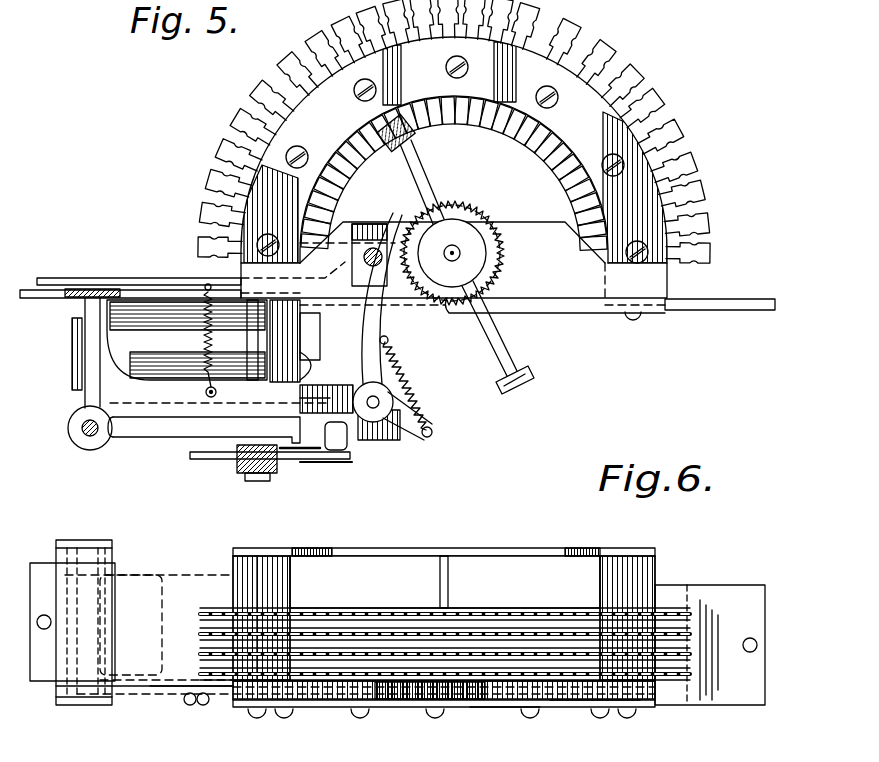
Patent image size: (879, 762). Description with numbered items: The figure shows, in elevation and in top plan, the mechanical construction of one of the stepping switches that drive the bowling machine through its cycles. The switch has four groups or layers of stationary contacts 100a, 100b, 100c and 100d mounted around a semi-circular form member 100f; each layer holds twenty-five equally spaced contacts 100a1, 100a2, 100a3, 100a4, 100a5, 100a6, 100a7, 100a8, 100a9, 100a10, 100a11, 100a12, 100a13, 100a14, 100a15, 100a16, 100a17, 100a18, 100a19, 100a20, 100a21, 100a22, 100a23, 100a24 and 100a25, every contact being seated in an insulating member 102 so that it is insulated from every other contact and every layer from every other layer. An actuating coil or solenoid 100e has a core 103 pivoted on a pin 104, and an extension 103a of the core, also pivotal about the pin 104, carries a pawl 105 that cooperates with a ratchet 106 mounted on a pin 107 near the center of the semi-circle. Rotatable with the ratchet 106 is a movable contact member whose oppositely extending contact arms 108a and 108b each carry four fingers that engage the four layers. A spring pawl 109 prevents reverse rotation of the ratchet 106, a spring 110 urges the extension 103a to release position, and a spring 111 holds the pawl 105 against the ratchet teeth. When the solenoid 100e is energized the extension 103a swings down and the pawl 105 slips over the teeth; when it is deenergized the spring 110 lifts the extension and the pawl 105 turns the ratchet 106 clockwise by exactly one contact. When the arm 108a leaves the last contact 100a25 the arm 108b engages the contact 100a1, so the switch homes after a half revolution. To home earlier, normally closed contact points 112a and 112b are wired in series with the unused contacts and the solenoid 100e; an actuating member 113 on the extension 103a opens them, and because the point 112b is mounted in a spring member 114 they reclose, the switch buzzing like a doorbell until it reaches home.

In FIG. 5, the stationary contact 100a1 is at (206, 247).
In FIG. 5, the stationary contact 100a2 is at (209, 213).
In FIG. 5, the stationary contact 100a3 is at (216, 179).
In FIG. 5, the stationary contact 100a4 is at (228, 142).
In FIG. 5, the stationary contact 100a5 is at (244, 112).
In FIG. 5, the stationary contact 100a6 is at (262, 93).
In FIG. 5, the stationary contact 100a7 is at (290, 64).
In FIG. 5, the stationary contact 100a8 is at (323, 35).
In FIG. 5, the stationary contact 100a9 is at (349, 15).
In FIG. 5, the stationary contact 100a10 is at (392, 27).
In FIG. 5, the stationary contact 100a11 is at (419, 23).
In FIG. 5, the stationary contact 100a12 is at (446, 20).
In FIG. 5, the stationary contact 100a13 is at (473, 19).
In FIG. 5, the stationary contact 100a14 is at (499, 20).
In FIG. 5, the stationary contact 100a15 is at (524, 22).
In FIG. 5, the stationary contact 100a16 is at (528, 13).
In FIG. 5, the stationary contact 100a17 is at (569, 30).
In FIG. 5, the stationary contact 100a18 is at (602, 49).
In FIG. 5, the stationary contact 100a19 is at (631, 77).
In FIG. 5, the stationary contact 100a20 is at (652, 101).
In FIG. 5, the stationary contact 100a21 is at (672, 122).
In FIG. 5, the stationary contact 100a22 is at (687, 157).
In FIG. 5, the stationary contact 100a23 is at (699, 187).
In FIG. 5, the stationary contact 100a24 is at (704, 217).
In FIG. 5, the last stationary contact 100a25 is at (702, 253).
In FIG. 6, the layer of stationary contacts 100a is at (214, 670).
In FIG. 6, the layer of stationary contacts 100b is at (214, 651).
In FIG. 6, the layer of stationary contacts 100c is at (214, 631).
In FIG. 6, the layer of stationary contacts 100d is at (214, 612).
In FIG. 5, the actuating coil or solenoid 100e is at (150, 305).
In FIG. 6, the actuating coil or solenoid 100e is at (178, 572).
In FIG. 5, the semi-circular form member 100f is at (700, 298).
In FIG. 6, the semi-circular form member 100f is at (500, 710).
In FIG. 6, the insulating member 102 is at (388, 610).
In FIG. 5, the core 103 is at (112, 332).
In FIG. 6, the core 103 is at (100, 618).
In FIG. 5, the extension of the core 103a is at (192, 396).
In FIG. 6, the extension of the core 103a is at (163, 690).
In FIG. 5, the pin 104 is at (86, 436).
In FIG. 6, the pin 104 is at (95, 526).
In FIG. 5, the pawl 105 is at (370, 322).
In FIG. 5, the ratchet 106 is at (470, 204).
In FIG. 6, the ratchet 106 is at (406, 708).
In FIG. 5, the pin 107 is at (452, 253).
In FIG. 6, the pin 107 is at (449, 586).
In FIG. 5, the contact arm 108a is at (424, 153).
In FIG. 5, the contact arm 108b is at (496, 355).
In FIG. 5, the spring pawl 109 is at (535, 315).
In FIG. 6, the spring pawl 109 is at (568, 710).
In FIG. 5, the spring 110 is at (203, 345).
In FIG. 6, the spring 110 is at (200, 705).
In FIG. 5, the spring 111 is at (416, 400).
In FIG. 5, the contact point 112a is at (305, 460).
In FIG. 5, the contact point 112b is at (318, 460).
In FIG. 5, the actuating member 113 is at (348, 445).
In FIG. 5, the spring member 114 is at (350, 464).